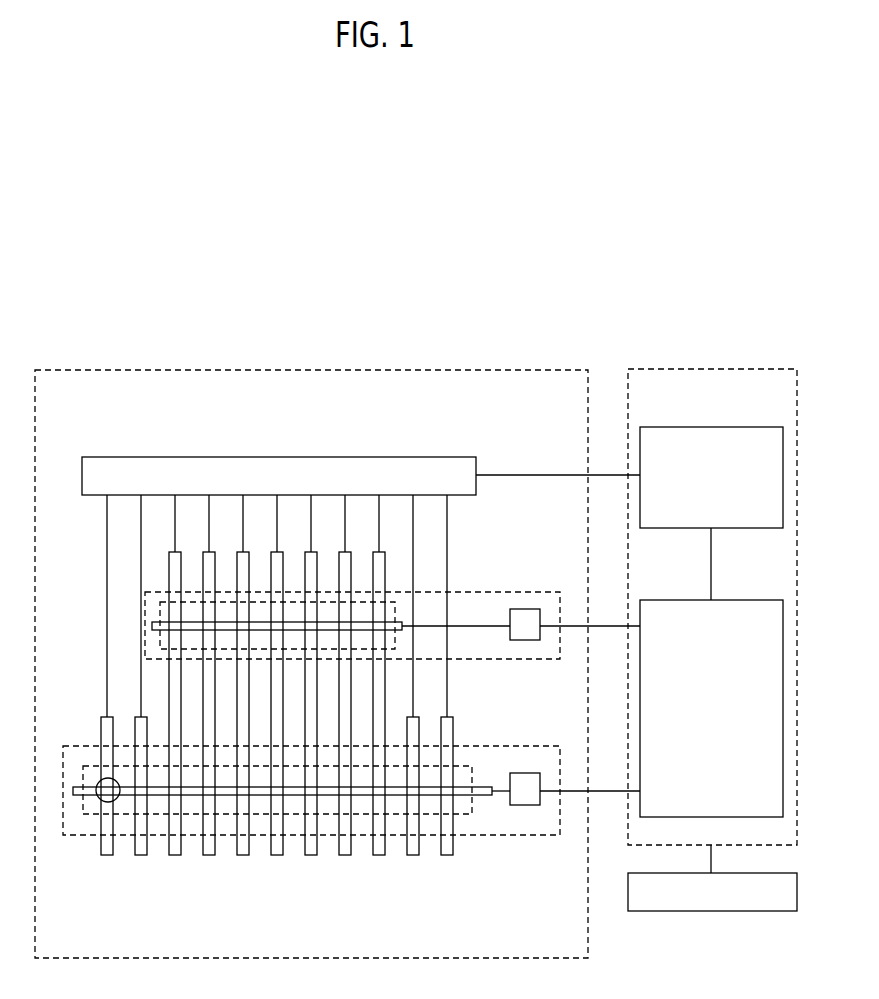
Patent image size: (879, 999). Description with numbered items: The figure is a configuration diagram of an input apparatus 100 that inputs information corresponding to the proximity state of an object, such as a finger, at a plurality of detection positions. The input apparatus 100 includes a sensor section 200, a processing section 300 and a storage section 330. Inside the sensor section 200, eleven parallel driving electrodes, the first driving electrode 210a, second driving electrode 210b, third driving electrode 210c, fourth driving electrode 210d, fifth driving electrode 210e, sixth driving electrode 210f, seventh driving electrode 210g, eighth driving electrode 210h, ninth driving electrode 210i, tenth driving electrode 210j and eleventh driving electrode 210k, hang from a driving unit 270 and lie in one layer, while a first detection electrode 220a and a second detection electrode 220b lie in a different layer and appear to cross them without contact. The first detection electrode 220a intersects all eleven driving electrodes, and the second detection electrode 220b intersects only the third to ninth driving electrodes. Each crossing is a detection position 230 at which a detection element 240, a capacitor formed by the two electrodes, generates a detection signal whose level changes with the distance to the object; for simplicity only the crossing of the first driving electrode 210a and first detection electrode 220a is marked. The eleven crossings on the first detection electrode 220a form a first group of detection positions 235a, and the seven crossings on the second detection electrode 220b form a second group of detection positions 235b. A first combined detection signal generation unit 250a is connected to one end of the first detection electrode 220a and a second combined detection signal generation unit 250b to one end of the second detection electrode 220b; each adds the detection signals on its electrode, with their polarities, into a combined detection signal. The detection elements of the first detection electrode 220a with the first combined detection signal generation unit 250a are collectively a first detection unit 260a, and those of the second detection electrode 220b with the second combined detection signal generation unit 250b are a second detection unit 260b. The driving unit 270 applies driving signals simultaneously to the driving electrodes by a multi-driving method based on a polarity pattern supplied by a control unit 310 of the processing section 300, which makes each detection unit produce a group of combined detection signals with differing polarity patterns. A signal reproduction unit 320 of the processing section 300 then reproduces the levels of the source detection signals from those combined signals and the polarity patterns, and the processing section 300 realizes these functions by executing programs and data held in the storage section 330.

The input apparatus 100 is at (400, 262).
The sensor section 200 is at (487, 369).
The first driving electrode 210a is at (107, 856).
The second driving electrode 210b is at (141, 856).
The third driving electrode 210c is at (175, 856).
The fourth driving electrode 210d is at (209, 856).
The fifth driving electrode 210e is at (243, 856).
The sixth driving electrode 210f is at (277, 856).
The seventh driving electrode 210g is at (311, 856).
The eighth driving electrode 210h is at (345, 856).
The ninth driving electrode 210i is at (379, 856).
The tenth driving electrode 210j is at (413, 856).
The eleventh driving electrode 210k is at (447, 856).
The first detection electrode 220a is at (485, 786).
The second detection electrode 220b is at (402, 624).
The detection position 230 is at (104, 786).
The first group of detection positions 235a is at (127, 765).
The second group of detection positions 235b is at (160, 611).
The detection element 240 is at (102, 803).
The first combined detection signal generation unit 250a is at (525, 773).
The second combined detection signal generation unit 250b is at (525, 640).
The first detection unit 260a is at (497, 836).
The second detection unit 260b is at (523, 592).
The driving unit 270 is at (130, 457).
The processing section 300 is at (757, 369).
The control unit 310 is at (757, 427).
The signal reproduction unit 320 is at (757, 600).
The storage section 330 is at (757, 911).